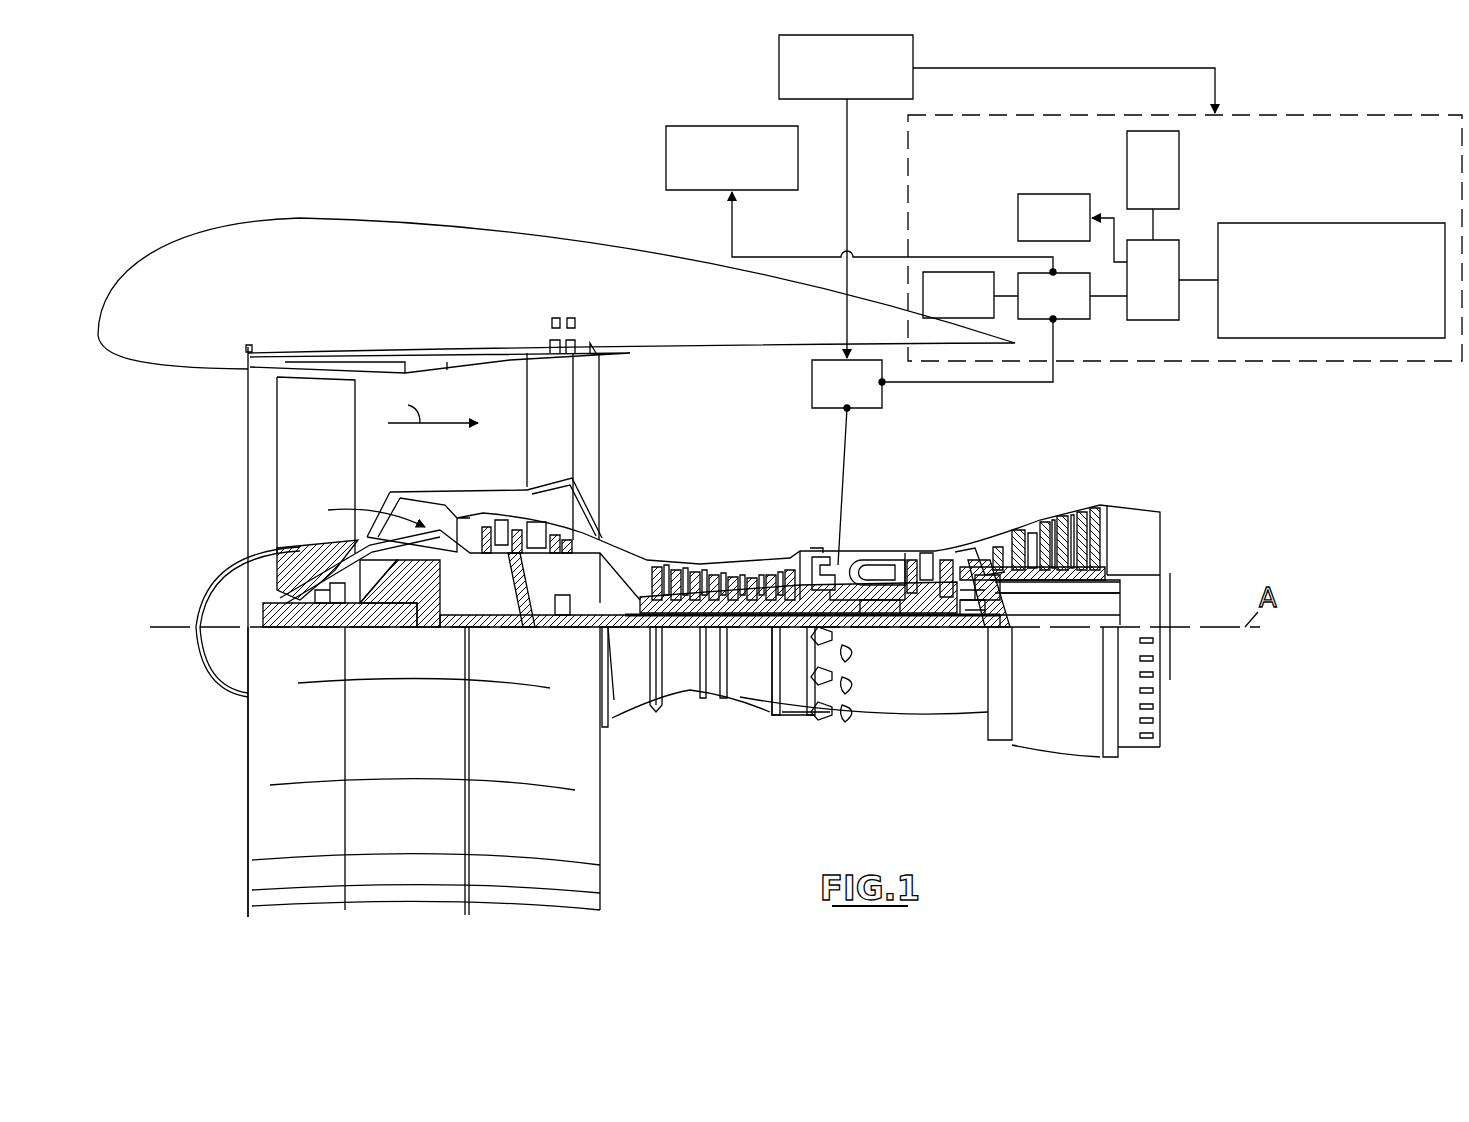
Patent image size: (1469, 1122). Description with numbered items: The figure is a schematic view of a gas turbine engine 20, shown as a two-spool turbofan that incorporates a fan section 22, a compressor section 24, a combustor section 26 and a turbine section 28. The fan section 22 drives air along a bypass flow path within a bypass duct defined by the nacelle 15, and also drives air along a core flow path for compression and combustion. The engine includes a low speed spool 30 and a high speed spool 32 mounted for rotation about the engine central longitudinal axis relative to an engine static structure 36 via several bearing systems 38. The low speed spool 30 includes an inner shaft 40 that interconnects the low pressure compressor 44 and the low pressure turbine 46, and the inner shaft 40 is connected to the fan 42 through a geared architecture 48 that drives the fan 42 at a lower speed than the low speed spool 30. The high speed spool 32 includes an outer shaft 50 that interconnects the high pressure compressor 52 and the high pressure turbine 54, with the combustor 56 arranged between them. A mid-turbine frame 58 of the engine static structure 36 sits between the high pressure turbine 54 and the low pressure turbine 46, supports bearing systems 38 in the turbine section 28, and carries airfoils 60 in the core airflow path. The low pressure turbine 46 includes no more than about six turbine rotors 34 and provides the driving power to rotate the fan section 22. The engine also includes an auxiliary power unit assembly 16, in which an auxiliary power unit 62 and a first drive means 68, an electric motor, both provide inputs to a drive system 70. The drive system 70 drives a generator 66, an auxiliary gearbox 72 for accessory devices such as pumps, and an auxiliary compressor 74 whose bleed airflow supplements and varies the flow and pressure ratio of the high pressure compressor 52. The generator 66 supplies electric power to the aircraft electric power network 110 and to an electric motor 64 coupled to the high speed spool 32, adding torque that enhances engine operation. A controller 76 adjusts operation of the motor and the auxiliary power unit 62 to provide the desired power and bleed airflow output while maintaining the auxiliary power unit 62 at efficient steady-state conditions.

The gas turbine engine 20 is at (212, 175).
The nacelle 15 is at (553, 262).
The fan section 22 is at (452, 327).
The fan 42 is at (303, 477).
The compressor section 24 is at (465, 465).
The low pressure compressor 44 is at (535, 530).
The high pressure compressor 52 is at (717, 600).
The combustor section 26 is at (858, 465).
The combustor 56 is at (865, 565).
The high speed spool 32 is at (797, 562).
The high pressure turbine 54 is at (928, 548).
The turbine section 28 is at (1117, 465).
The mid-turbine frame 58 is at (968, 540).
The low pressure turbine 46 is at (1047, 520).
The bearing systems 38 is at (323, 627).
The geared architecture 48 is at (430, 610).
The inner shaft 40 is at (622, 630).
The low speed spool 30 is at (752, 632).
The engine static structure 36 is at (791, 716).
The outer shaft 50 is at (872, 612).
The airfoils 60 is at (985, 578).
The turbine rotors 34 is at (1065, 597).
The auxiliary power unit assembly 16 is at (1250, 364).
The controller 76 is at (832, 82).
The aircraft electric power network 110 is at (711, 173).
The first drive means 68 is at (1139, 185).
The auxiliary gearbox 72 is at (1040, 232).
The auxiliary compressor 74 is at (944, 310).
The generator 66 is at (1040, 310).
The drive system 70 is at (1139, 294).
The auxiliary power unit 62 is at (1318, 295).
The electric motor 64 is at (833, 398).